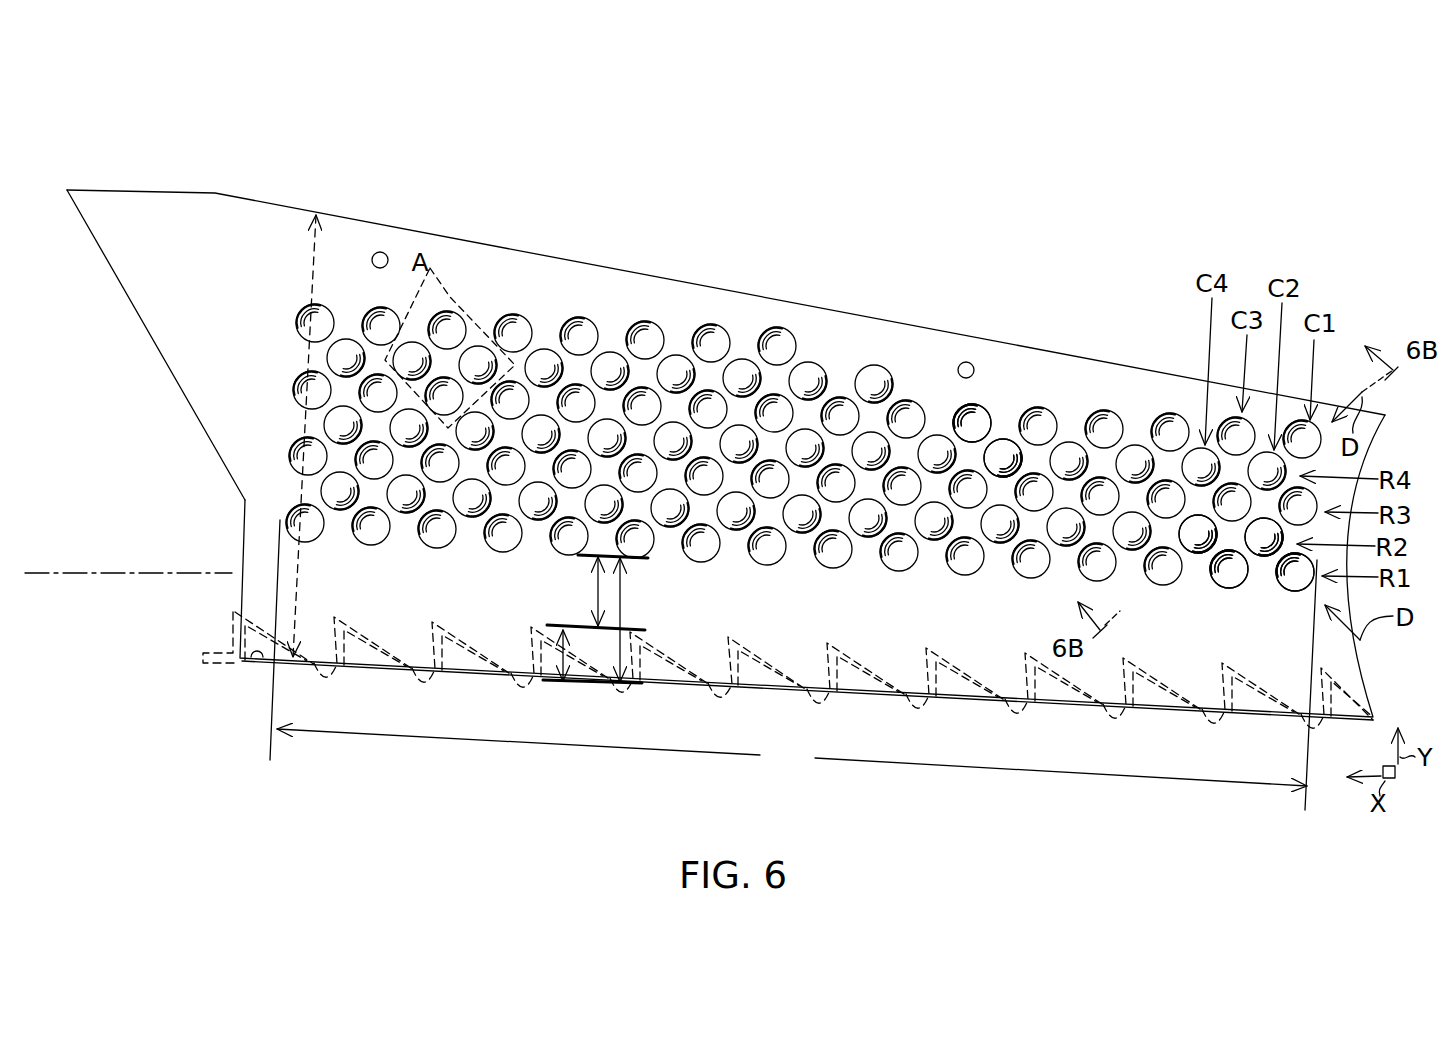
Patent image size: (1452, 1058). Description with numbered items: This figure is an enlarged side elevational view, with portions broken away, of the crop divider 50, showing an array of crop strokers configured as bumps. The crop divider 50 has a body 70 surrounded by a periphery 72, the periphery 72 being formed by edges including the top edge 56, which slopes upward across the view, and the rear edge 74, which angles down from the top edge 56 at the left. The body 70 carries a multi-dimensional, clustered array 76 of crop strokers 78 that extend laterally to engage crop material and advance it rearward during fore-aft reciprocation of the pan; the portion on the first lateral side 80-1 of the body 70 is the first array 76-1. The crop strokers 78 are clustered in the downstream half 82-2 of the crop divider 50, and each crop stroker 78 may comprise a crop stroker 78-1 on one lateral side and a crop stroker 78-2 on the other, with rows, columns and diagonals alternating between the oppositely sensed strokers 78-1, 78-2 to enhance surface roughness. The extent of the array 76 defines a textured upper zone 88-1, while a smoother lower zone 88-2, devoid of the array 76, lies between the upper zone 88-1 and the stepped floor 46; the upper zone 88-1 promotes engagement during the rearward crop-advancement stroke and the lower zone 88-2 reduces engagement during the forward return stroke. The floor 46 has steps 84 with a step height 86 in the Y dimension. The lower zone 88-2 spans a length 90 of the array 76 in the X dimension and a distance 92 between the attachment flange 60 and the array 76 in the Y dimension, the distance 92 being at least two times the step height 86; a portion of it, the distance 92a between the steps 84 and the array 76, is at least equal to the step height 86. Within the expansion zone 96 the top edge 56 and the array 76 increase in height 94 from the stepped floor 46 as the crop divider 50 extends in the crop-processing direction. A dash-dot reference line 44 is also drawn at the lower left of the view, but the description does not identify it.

The crop divider 50 is at (275, 113).
The rear edge 74 is at (133, 308).
The periphery 72 is at (452, 240).
The body 70 is at (488, 268).
The first lateral side 80-1 is at (537, 282).
The downstream half 82-2 is at (613, 287).
The expansion zone 96 is at (825, 328).
The array of crop strokers 76 is at (1080, 390).
The first array 76-1 is at (1135, 397).
The crop strokers 78 is at (1010, 443).
The crop stroker 78-1 is at (1193, 560).
The crop stroker 78-2 is at (1225, 588).
The top edge 56 is at (1027, 352).
The height 94 is at (313, 250).
The upper zone 88-1 is at (290, 484).
The lower zone 88-2 is at (337, 562).
The centerline 44 is at (85, 575).
The attachment flange 60 is at (253, 660).
The steps 84 is at (880, 670).
The floor 46 is at (1112, 730).
The distance 92a is at (598, 590).
The distance 92 is at (620, 612).
The step height 86 is at (563, 650).
The length 90 is at (793, 665).